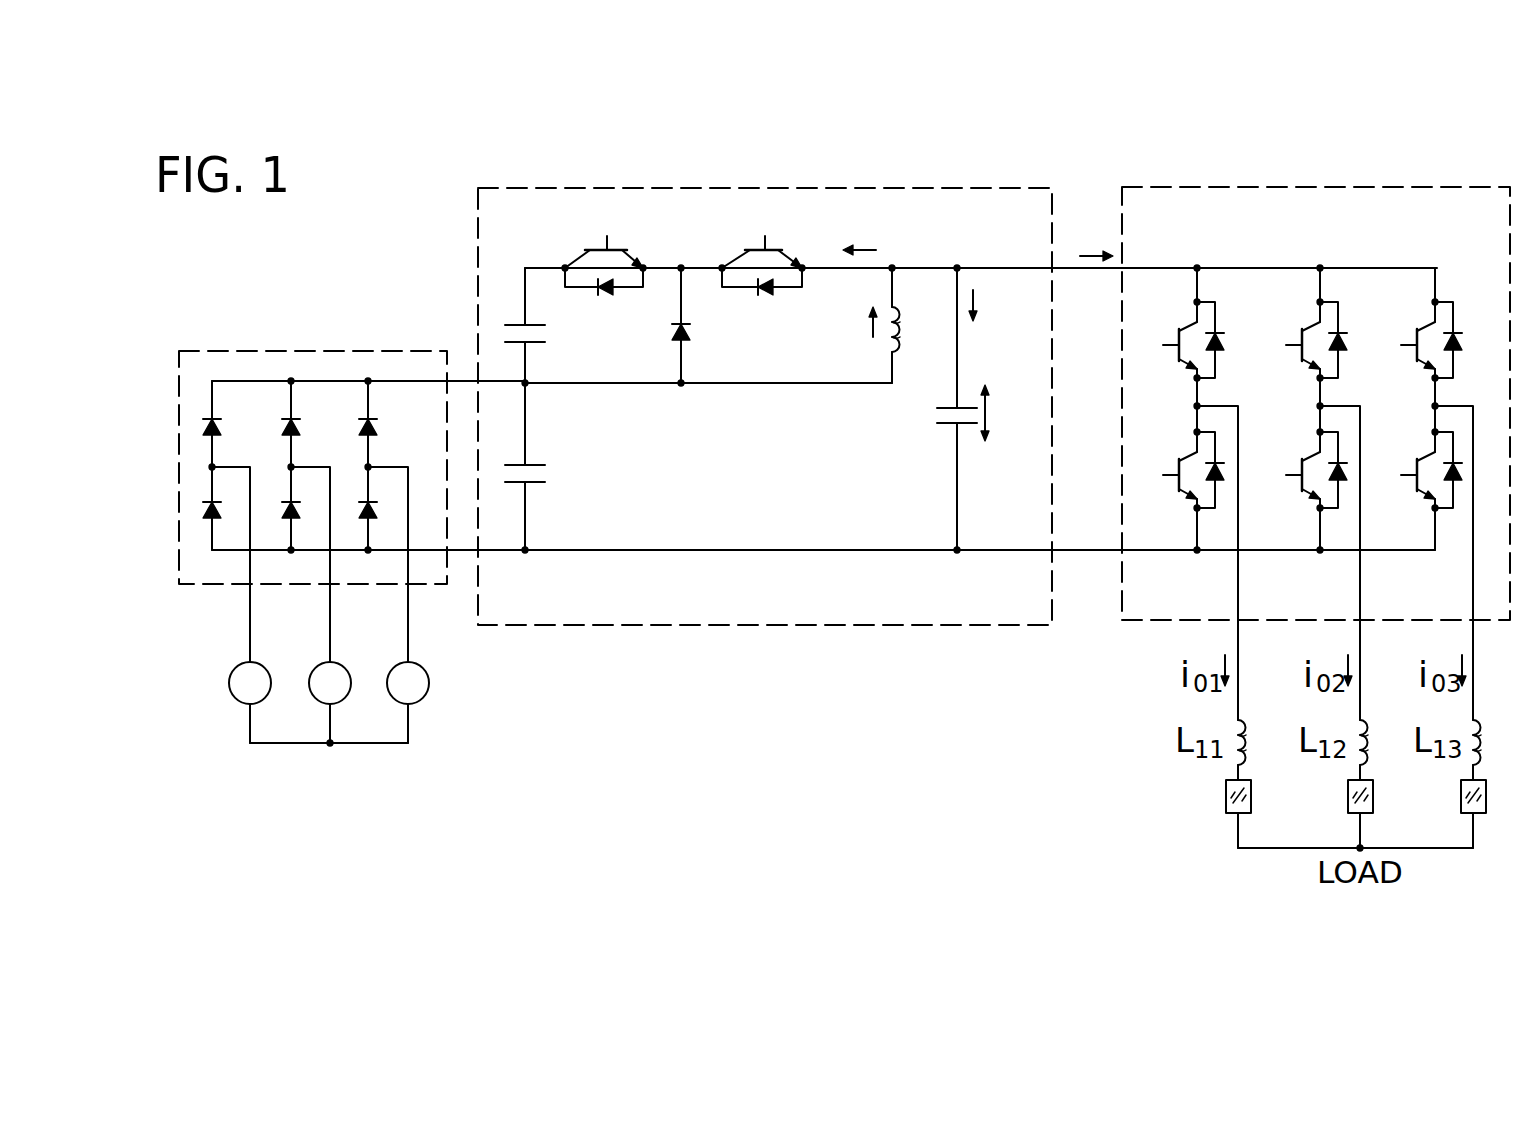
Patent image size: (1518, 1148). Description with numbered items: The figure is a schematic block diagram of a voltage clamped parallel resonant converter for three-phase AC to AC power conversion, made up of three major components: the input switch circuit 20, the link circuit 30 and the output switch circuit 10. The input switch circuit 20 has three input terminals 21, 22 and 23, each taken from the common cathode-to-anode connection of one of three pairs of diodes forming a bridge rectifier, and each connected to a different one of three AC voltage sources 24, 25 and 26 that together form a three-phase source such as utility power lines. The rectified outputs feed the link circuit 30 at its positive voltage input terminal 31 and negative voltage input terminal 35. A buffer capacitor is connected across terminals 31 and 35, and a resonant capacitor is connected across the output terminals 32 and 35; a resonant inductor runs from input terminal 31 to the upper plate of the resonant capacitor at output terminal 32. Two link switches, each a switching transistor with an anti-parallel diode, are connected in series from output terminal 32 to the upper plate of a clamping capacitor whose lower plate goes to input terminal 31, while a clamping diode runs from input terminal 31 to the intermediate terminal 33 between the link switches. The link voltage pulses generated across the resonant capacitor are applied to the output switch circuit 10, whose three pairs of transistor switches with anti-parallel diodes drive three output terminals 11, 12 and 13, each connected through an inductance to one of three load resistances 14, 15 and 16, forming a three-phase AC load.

The output switch circuit 10 is at (1292, 430).
The output terminal 11 is at (1182, 406).
The output terminal 12 is at (1305, 406).
The output terminal 13 is at (1420, 406).
The load resistance 14 is at (1226, 797).
The load resistance 15 is at (1348, 797).
The load resistance 16 is at (1461, 797).
The input switch circuit 20 is at (789, 551).
The input terminal 21 is at (212, 467).
The input terminal 22 is at (291, 467).
The input terminal 23 is at (368, 467).
The AC voltage source 24 is at (229, 683).
The AC voltage source 25 is at (313, 673).
The AC voltage source 26 is at (390, 675).
The link circuit 30 is at (957, 385).
The positive voltage input terminal 31 is at (527, 386).
The output terminal 32 is at (958, 254).
The intermediate terminal 33 is at (691, 252).
The negative voltage input terminal 35 is at (527, 553).